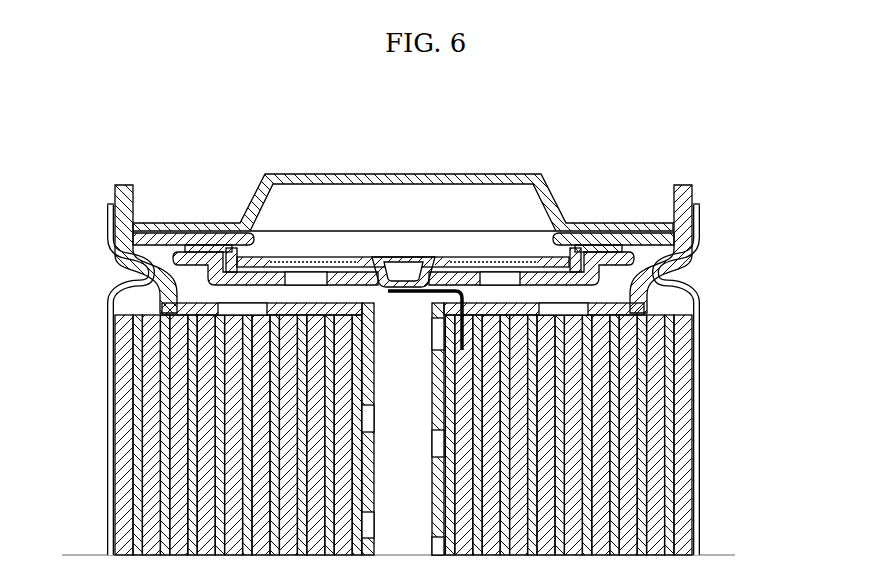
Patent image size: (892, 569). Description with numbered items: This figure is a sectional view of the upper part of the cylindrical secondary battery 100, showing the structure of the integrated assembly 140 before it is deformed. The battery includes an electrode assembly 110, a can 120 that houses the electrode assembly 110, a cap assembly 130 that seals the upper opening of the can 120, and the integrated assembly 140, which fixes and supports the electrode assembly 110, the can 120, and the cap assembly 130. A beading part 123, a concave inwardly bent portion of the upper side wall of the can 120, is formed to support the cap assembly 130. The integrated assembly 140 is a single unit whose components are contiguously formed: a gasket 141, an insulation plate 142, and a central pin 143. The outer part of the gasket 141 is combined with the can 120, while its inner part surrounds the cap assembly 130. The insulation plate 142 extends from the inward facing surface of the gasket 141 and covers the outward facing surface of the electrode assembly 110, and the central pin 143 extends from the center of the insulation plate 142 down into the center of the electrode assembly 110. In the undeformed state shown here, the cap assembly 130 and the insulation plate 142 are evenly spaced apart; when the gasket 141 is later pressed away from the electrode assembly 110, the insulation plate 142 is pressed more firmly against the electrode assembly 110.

The cylindrical secondary battery 100 is at (193, 110).
The electrode assembly 110 is at (690, 417).
The can 120 is at (106, 441).
The beading part 123 is at (152, 281).
The cap assembly 130 is at (526, 160).
The integrated assembly 140 is at (470, 292).
The gasket 141 is at (698, 230).
The insulation plate 142 is at (597, 301).
The central pin 143 is at (437, 400).